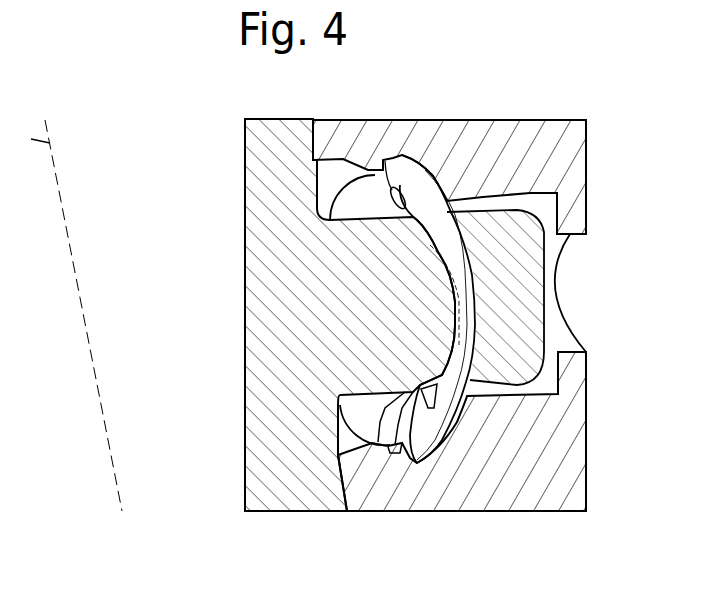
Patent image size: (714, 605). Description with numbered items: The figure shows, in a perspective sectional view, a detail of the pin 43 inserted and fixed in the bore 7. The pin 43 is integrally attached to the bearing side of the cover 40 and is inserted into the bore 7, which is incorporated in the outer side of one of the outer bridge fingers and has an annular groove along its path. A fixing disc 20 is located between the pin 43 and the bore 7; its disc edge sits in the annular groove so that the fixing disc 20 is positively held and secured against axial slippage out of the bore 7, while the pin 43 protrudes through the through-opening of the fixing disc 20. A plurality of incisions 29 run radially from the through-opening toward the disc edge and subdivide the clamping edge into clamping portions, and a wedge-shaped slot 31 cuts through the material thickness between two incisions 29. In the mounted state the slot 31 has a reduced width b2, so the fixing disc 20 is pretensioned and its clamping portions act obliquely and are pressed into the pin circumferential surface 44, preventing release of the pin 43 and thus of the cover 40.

The cover 40 is at (288, 292).
The fixing disc 20 is at (452, 250).
The incision 29 is at (400, 203).
The slot 31 is at (396, 425).
The pin 43 is at (498, 237).
The pin circumferential surface 44 is at (483, 385).
The bore 7 is at (592, 288).
The slot width in mounted state b2 is at (403, 371).